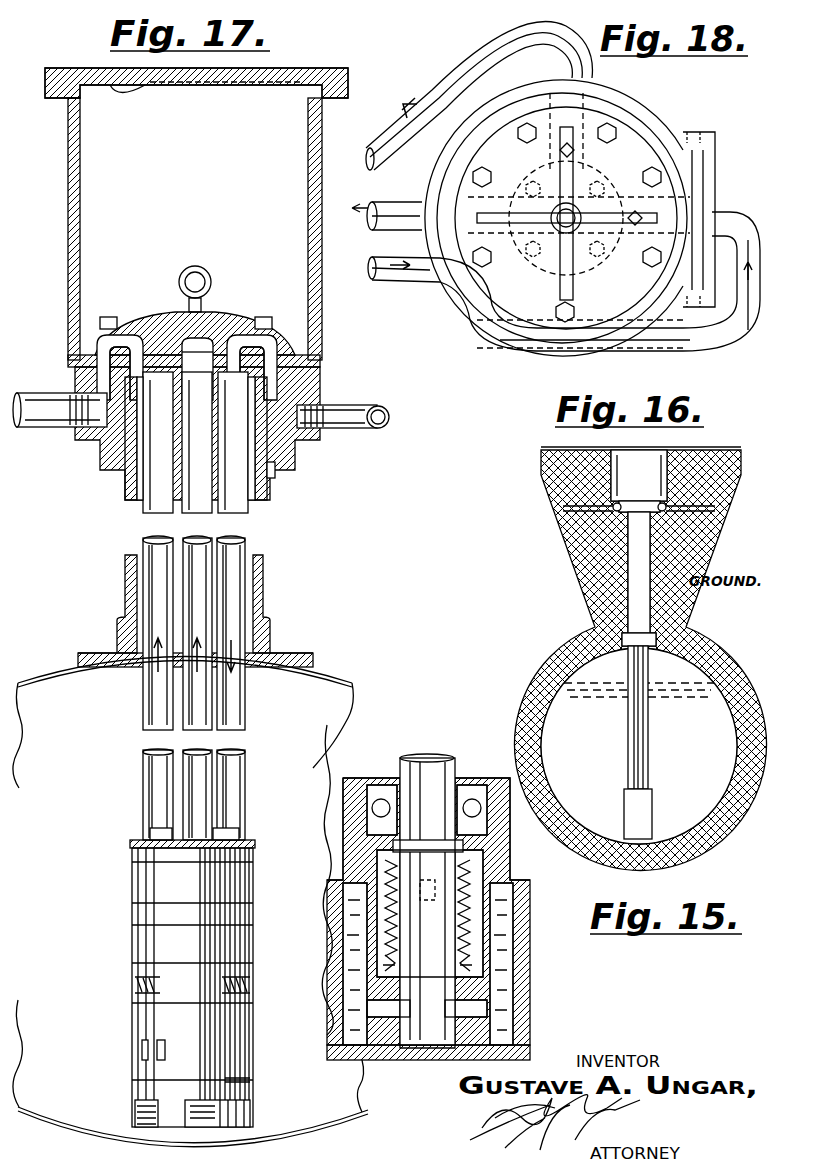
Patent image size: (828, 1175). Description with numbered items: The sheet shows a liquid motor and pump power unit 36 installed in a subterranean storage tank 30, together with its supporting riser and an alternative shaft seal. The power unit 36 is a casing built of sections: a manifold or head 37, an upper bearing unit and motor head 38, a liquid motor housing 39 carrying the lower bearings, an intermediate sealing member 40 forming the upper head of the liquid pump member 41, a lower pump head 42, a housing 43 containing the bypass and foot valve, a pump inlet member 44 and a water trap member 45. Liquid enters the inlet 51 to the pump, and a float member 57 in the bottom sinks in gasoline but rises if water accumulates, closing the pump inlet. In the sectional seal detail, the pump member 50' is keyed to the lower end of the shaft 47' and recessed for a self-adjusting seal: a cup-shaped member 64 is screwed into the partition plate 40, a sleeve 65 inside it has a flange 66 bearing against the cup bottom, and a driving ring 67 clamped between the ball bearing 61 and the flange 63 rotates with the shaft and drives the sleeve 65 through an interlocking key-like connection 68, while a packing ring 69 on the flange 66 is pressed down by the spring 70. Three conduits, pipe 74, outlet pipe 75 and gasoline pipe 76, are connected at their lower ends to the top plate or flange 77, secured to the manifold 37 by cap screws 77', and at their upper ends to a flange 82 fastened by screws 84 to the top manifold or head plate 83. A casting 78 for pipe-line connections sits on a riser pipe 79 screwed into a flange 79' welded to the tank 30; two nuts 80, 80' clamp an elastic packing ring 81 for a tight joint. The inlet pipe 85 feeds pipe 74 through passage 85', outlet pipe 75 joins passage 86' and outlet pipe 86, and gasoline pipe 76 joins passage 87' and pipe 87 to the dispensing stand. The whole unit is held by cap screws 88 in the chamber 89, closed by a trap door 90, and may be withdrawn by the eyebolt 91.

In FIG. 17, the storage tank 30 is at (45, 680).
In FIG. 16, the storage tank 30 is at (719, 687).
In FIG. 17, the power unit 36 is at (192, 987).
In FIG. 16, the power unit 36 is at (643, 811).
In FIG. 17, the manifold or head 37 is at (147, 868).
In FIG. 17, the upper bearing unit and motor head 38 is at (137, 905).
In FIG. 17, the liquid motor housing 39 is at (142, 930).
In FIG. 15, the liquid motor housing 39 is at (500, 777).
In FIG. 17, the intermediate sealing member 40 is at (137, 963).
In FIG. 15, the intermediate sealing member 40 is at (518, 867).
In FIG. 17, the liquid pump member 41 is at (138, 985).
In FIG. 15, the liquid pump member 41 is at (520, 965).
In FIG. 17, the lower pump head 42 is at (138, 1018).
In FIG. 15, the lower pump head 42 is at (517, 1053).
In FIG. 17, the housing 43 is at (173, 1052).
In FIG. 17, the pump inlet member 44 is at (138, 1085).
In FIG. 17, the water trap member 45 is at (142, 1112).
In FIG. 15, the shaft 47' is at (428, 879).
In FIG. 15, the pump member 50' is at (472, 1000).
In FIG. 17, the inlet 51 is at (259, 1082).
In FIG. 17, the float member 57 is at (247, 1110).
In FIG. 15, the ball bearing 61 is at (370, 784).
In FIG. 15, the flange 63 is at (373, 847).
In FIG. 15, the cup-shaped member 64 is at (480, 915).
In FIG. 15, the sleeve 65 is at (473, 935).
In FIG. 15, the flange 66 is at (473, 965).
In FIG. 15, the driving ring 67 is at (480, 857).
In FIG. 15, the interlocking key-like connection 68 is at (428, 902).
In FIG. 15, the packing ring 69 is at (393, 948).
In FIG. 15, the spring 70 is at (400, 912).
In FIG. 17, the pipe 74 is at (235, 783).
In FIG. 16, the pipe 74 is at (648, 737).
In FIG. 17, the outlet pipe 75 is at (200, 758).
In FIG. 16, the outlet pipe 75 is at (643, 767).
In FIG. 17, the gasoline pipe 76 is at (155, 782).
In FIG. 16, the gasoline pipe 76 is at (630, 748).
In FIG. 17, the top plate or flange 77 is at (210, 832).
In FIG. 17, the bolts or cap screws 77' is at (158, 816).
In FIG. 17, the casting 78 is at (290, 447).
In FIG. 16, the casting 78 is at (626, 512).
In FIG. 17, the riser pipe 79 is at (210, 603).
In FIG. 16, the riser pipe 79 is at (603, 572).
In FIG. 17, the flange 79' is at (198, 636).
In FIG. 16, the flange 79' is at (674, 623).
In FIG. 17, the threaded ring or nut 80 is at (288, 490).
In FIG. 17, the threaded ring or nut 80' is at (305, 431).
In FIG. 17, the elastic packing ring 81 is at (118, 432).
In FIG. 17, the flange 82 is at (192, 345).
In FIG. 17, the top manifold or head plate 83 is at (228, 340).
In FIG. 18, the top manifold or head plate 83 is at (567, 213).
In FIG. 18, the screws or bolts 84 is at (552, 272).
In FIG. 17, the inlet pipe 85 is at (364, 423).
In FIG. 16, the inlet pipe 85 is at (711, 520).
In FIG. 18, the inlet pipe 85 is at (568, 294).
In FIG. 17, the passage 85' is at (301, 360).
In FIG. 18, the outlet pipe 86 is at (479, 96).
In FIG. 17, the passage 86' is at (131, 321).
In FIG. 17, the pipe 87 is at (60, 393).
In FIG. 16, the pipe 87 is at (566, 495).
In FIG. 18, the pipe 87 is at (377, 228).
In FIG. 17, the passage 87' is at (81, 354).
In FIG. 17, the cap screws 88 is at (108, 316).
In FIG. 18, the cap screws 88 is at (652, 166).
In FIG. 17, the chamber 89 is at (68, 188).
In FIG. 16, the chamber 89 is at (650, 480).
In FIG. 18, the chamber 89 is at (543, 353).
In FIG. 17, the trap door 90 is at (282, 70).
In FIG. 17, the eyebolt 91 is at (198, 266).
In FIG. 18, the eyebolt 91 is at (582, 206).